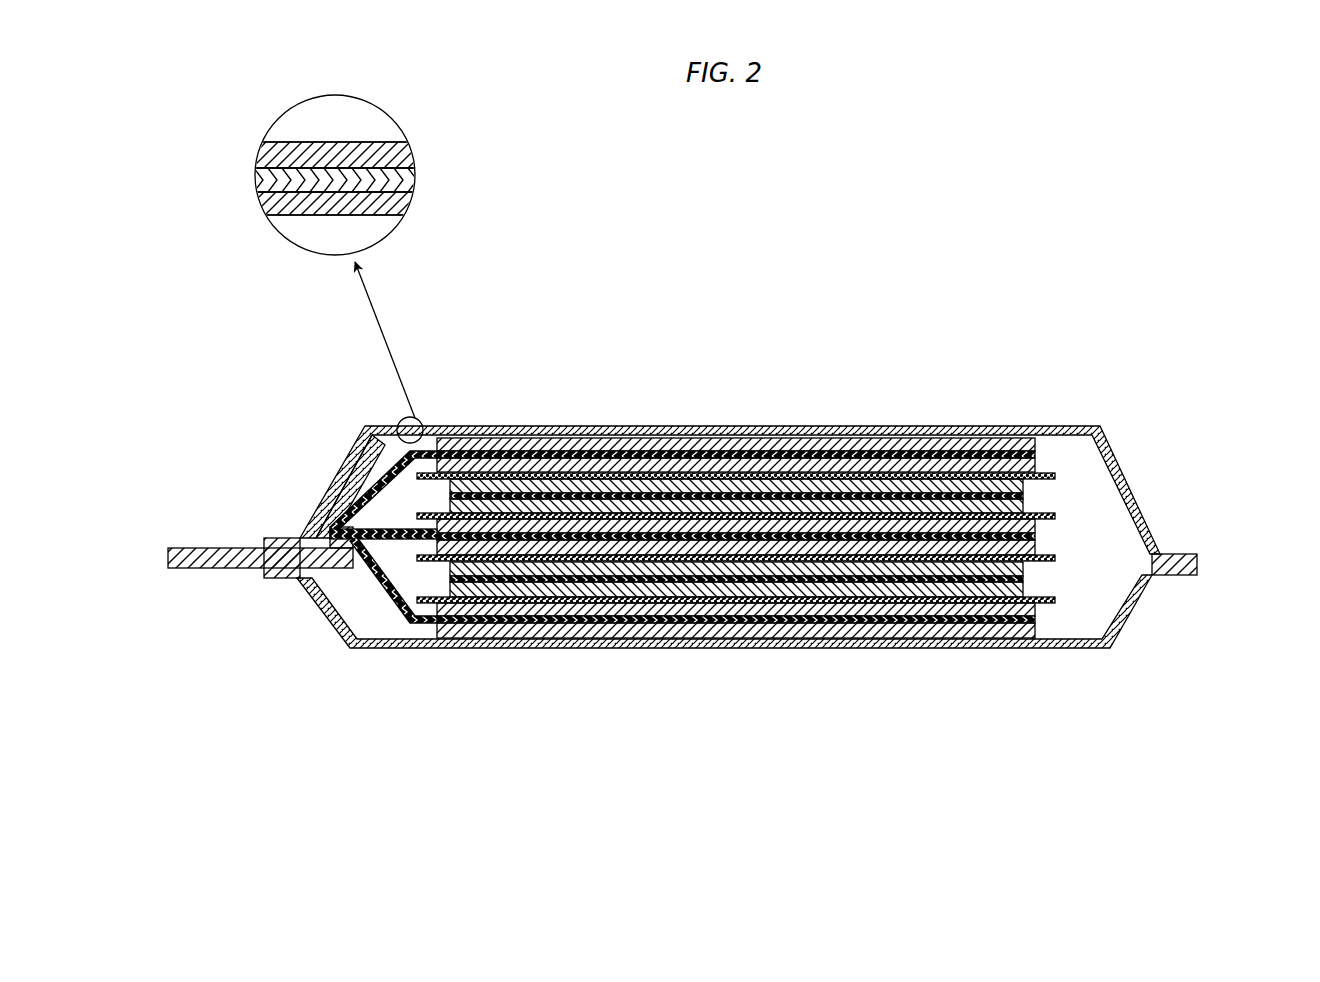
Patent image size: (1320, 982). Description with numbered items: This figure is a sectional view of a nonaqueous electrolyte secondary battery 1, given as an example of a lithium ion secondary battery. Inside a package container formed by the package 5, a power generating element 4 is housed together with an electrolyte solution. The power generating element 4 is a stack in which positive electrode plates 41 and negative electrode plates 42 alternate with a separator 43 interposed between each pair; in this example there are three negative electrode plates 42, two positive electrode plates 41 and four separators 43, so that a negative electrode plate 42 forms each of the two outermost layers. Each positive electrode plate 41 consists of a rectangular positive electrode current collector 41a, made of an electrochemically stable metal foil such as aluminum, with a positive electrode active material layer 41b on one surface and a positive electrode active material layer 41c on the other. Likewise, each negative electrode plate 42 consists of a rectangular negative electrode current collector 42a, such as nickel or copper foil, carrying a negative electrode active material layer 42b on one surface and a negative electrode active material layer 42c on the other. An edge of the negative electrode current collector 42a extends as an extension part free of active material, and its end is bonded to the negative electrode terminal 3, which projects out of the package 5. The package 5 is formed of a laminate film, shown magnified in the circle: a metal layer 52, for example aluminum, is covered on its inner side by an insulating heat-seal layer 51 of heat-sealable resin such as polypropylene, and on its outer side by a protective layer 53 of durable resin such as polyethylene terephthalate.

The battery 1 is at (1037, 352).
The negative electrode terminal 3 is at (221, 568).
The power generating element 4 is at (1110, 568).
The package 5 is at (936, 426).
The positive electrode plate 41 is at (620, 550).
The positive electrode current collector 41a is at (448, 496).
The positive electrode active material layer 41b is at (440, 483).
The positive electrode active material layer 41c is at (448, 509).
The negative electrode plate 42 is at (805, 544).
The negative electrode current collector 42a is at (1040, 454).
The negative electrode active material layer 42b is at (1040, 442).
The negative electrode active material layer 42c is at (1040, 466).
The separator 43 is at (740, 517).
The heat-seal layer 51 is at (397, 205).
The metal layer 52 is at (398, 181).
The protective layer 53 is at (402, 157).